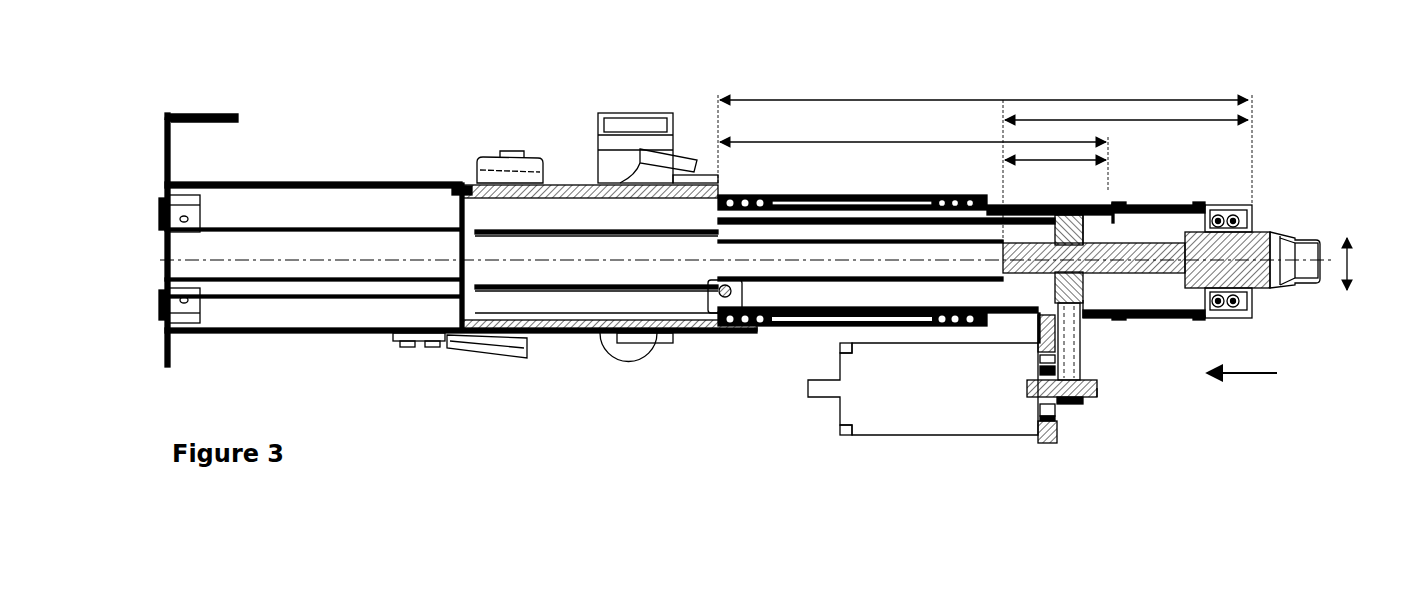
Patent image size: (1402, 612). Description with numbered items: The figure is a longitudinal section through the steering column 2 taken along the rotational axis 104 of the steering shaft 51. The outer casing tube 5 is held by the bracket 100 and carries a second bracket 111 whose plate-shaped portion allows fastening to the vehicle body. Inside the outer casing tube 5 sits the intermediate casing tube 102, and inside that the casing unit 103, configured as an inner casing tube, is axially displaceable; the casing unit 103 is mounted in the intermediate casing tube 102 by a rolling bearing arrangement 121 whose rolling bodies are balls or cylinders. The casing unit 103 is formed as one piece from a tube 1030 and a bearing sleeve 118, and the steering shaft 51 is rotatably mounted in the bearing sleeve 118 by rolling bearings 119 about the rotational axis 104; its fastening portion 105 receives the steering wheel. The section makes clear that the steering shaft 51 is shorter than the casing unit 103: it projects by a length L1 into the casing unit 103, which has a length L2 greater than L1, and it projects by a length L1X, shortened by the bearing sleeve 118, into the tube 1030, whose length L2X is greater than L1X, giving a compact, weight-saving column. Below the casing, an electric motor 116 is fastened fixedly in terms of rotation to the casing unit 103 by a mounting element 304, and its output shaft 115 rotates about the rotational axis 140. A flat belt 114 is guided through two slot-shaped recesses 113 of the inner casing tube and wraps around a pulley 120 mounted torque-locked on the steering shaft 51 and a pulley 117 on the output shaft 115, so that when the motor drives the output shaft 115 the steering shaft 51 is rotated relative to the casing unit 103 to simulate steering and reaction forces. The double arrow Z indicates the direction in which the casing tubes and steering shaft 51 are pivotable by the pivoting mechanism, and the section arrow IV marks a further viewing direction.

The steering column 2 is at (356, 109).
The outer casing tube 5 is at (313, 182).
The steering shaft 51 is at (1153, 277).
The bracket 100 is at (623, 130).
The intermediate casing tube 102 is at (812, 196).
The casing unit 103 is at (1102, 200).
The rotational axis 104 is at (1286, 255).
The fastening portion 105 is at (1309, 243).
The second bracket 111 is at (207, 113).
The slot-shaped recesses 113 is at (1080, 313).
The flat belt 114 is at (1082, 352).
The output shaft 115 is at (1096, 392).
The electric motor 116 is at (912, 400).
The pulley 117 is at (1072, 405).
The bearing sleeve 118 is at (1166, 205).
The rolling bearings 119 is at (1233, 213).
The pulley 120 is at (1084, 300).
The rolling bearing arrangement 121 is at (956, 199).
The rotational axis 140 is at (1099, 390).
The mounting element 304 is at (1048, 444).
The tube 1030 is at (866, 201).
The length L1 is at (1160, 121).
The length L1X is at (1056, 161).
The length L2 is at (995, 99).
The length L2X is at (886, 141).
The double arrow Z is at (1350, 258).
The view IV is at (1242, 363).